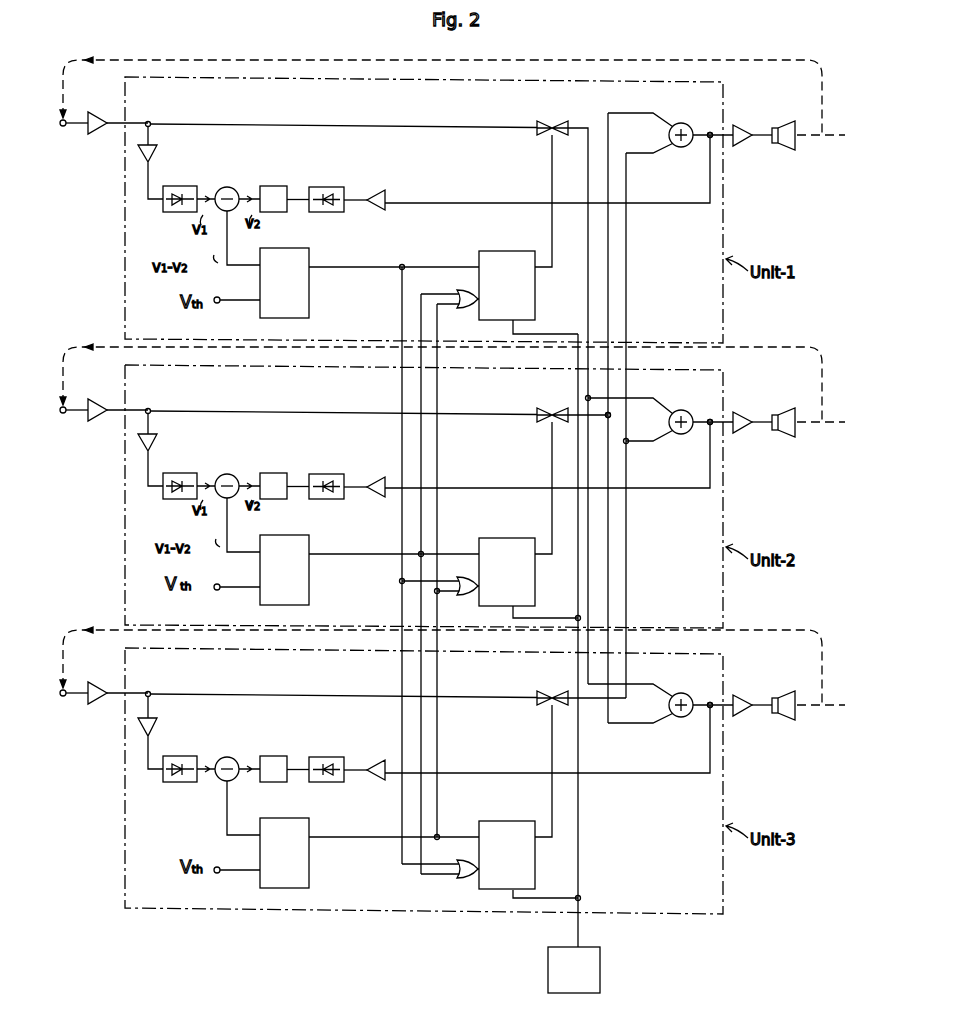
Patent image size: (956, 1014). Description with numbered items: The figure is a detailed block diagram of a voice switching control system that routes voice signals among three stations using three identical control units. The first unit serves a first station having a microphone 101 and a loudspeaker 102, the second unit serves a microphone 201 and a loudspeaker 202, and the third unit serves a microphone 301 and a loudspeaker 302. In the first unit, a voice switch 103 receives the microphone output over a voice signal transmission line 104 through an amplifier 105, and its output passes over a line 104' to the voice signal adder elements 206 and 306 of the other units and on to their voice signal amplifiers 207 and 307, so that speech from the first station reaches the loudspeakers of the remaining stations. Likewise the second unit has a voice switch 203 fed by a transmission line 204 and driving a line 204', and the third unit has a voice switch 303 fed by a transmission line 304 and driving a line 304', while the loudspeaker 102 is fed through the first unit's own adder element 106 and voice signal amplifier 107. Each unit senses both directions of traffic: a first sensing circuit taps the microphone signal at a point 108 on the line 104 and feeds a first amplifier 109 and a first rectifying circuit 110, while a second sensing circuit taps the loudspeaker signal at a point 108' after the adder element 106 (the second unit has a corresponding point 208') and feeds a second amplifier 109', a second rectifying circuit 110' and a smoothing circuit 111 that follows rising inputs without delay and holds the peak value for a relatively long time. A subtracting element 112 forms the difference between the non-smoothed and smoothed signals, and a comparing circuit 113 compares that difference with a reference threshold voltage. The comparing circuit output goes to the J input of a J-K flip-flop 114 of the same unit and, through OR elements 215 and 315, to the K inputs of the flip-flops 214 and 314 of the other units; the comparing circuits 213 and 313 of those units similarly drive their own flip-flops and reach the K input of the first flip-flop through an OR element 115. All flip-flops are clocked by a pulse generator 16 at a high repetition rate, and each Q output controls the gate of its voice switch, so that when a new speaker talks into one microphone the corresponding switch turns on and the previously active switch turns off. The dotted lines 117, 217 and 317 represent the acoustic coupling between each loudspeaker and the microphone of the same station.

The pulse generator 16 is at (603, 973).
The microphone 101 is at (63, 127).
The loudspeaker 102 is at (795, 158).
The voice switch 103 is at (547, 121).
The voice signal transmission line 104 is at (343, 111).
The line 104' is at (622, 406).
The amplifier 105 is at (98, 113).
The voice signal adder element 106 is at (680, 122).
The voice signal amplifier 107 is at (744, 125).
The point 108 is at (166, 108).
The point 108' is at (664, 164).
The first amplifier 109 is at (169, 162).
The second amplifier 109' is at (527, 172).
The first rectifying circuit 110 is at (199, 186).
The second rectifying circuit 110' is at (334, 186).
The smoothing circuit 111 is at (277, 188).
The subtracting element 112 is at (237, 190).
The comparing circuit 113 is at (308, 253).
The J-K flip-flop 114 is at (503, 247).
The OR element 115 is at (465, 315).
The dotted line 117 is at (768, 60).
The microphone 201 is at (69, 428).
The loudspeaker 202 is at (801, 443).
The voice switch 203 is at (558, 402).
The voice signal transmission line 204 is at (343, 399).
The line 204' is at (641, 418).
The voice signal adder element 206 is at (644, 407).
The voice signal amplifier 207 is at (751, 409).
The point 208' is at (660, 455).
The comparing circuit 213 is at (285, 551).
The J-K flip-flop 214 is at (507, 555).
The OR element 215 is at (440, 600).
The dotted line 217 is at (452, 371).
The microphone 301 is at (69, 712).
The loudspeaker 302 is at (804, 725).
The voice switch 303 is at (565, 685).
The voice signal transmission line 304 is at (343, 683).
The line 304' is at (653, 425).
The voice signal adder element 306 is at (642, 692).
The voice signal amplifier 307 is at (751, 689).
The comparing circuit 313 is at (286, 834).
The J-K flip-flop 314 is at (507, 837).
The OR element 315 is at (440, 883).
The dotted line 317 is at (452, 657).